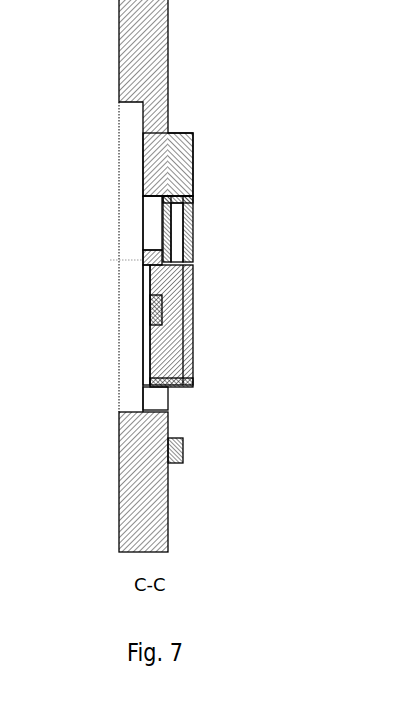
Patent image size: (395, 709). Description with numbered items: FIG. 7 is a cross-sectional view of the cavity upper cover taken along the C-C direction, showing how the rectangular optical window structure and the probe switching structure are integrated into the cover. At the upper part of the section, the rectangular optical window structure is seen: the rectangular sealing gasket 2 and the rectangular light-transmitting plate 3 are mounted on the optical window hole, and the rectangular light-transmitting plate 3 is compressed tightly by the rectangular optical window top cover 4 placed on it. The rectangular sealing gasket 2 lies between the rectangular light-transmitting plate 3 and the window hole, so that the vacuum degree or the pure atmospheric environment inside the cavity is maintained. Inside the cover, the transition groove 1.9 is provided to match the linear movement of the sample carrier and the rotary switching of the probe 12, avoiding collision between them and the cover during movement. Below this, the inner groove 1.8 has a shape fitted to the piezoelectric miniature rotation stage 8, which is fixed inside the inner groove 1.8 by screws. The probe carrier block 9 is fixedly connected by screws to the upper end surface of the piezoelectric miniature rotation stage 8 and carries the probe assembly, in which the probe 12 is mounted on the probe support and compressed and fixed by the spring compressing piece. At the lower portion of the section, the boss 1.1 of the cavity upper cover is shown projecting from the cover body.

The rectangular sealing gasket 2 is at (170, 195).
The transition groove 1.9 is at (152, 195).
The probe 12 is at (152, 256).
The rectangular optical window top cover 4 is at (197, 198).
The rectangular light-transmitting plate 3 is at (196, 190).
The piezoelectric miniature rotation stage 8 is at (170, 335).
The probe carrier block 9 is at (155, 312).
The inner groove 1.8 is at (193, 383).
The boss 1.1 is at (175, 387).